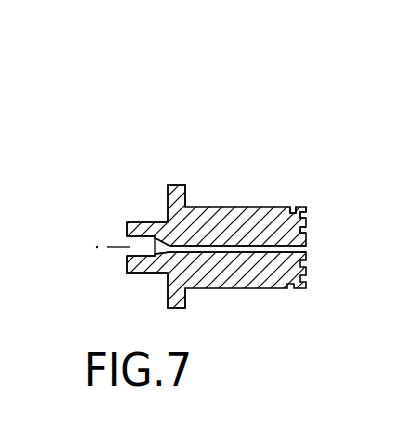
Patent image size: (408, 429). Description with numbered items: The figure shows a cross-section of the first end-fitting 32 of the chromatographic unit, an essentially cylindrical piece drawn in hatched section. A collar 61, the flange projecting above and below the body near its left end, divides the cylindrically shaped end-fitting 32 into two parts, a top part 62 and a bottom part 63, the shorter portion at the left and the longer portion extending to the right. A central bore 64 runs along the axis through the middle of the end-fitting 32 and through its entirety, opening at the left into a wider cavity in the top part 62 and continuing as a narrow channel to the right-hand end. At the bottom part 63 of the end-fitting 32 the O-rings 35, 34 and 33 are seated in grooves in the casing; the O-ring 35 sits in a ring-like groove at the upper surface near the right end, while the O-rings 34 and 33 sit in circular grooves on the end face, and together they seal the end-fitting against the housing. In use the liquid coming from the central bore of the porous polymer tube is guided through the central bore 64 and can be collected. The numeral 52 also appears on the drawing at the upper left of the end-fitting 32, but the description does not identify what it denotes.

The first end-fitting 32 is at (218, 273).
The O-ring 33 is at (308, 230).
The O-ring 34 is at (308, 214).
The O-ring 35 is at (292, 207).
The nozzle head 52 is at (133, 222).
The collar 61 is at (178, 190).
The top part 62 is at (125, 268).
The bottom part 63 is at (308, 257).
The central bore 64 is at (118, 245).